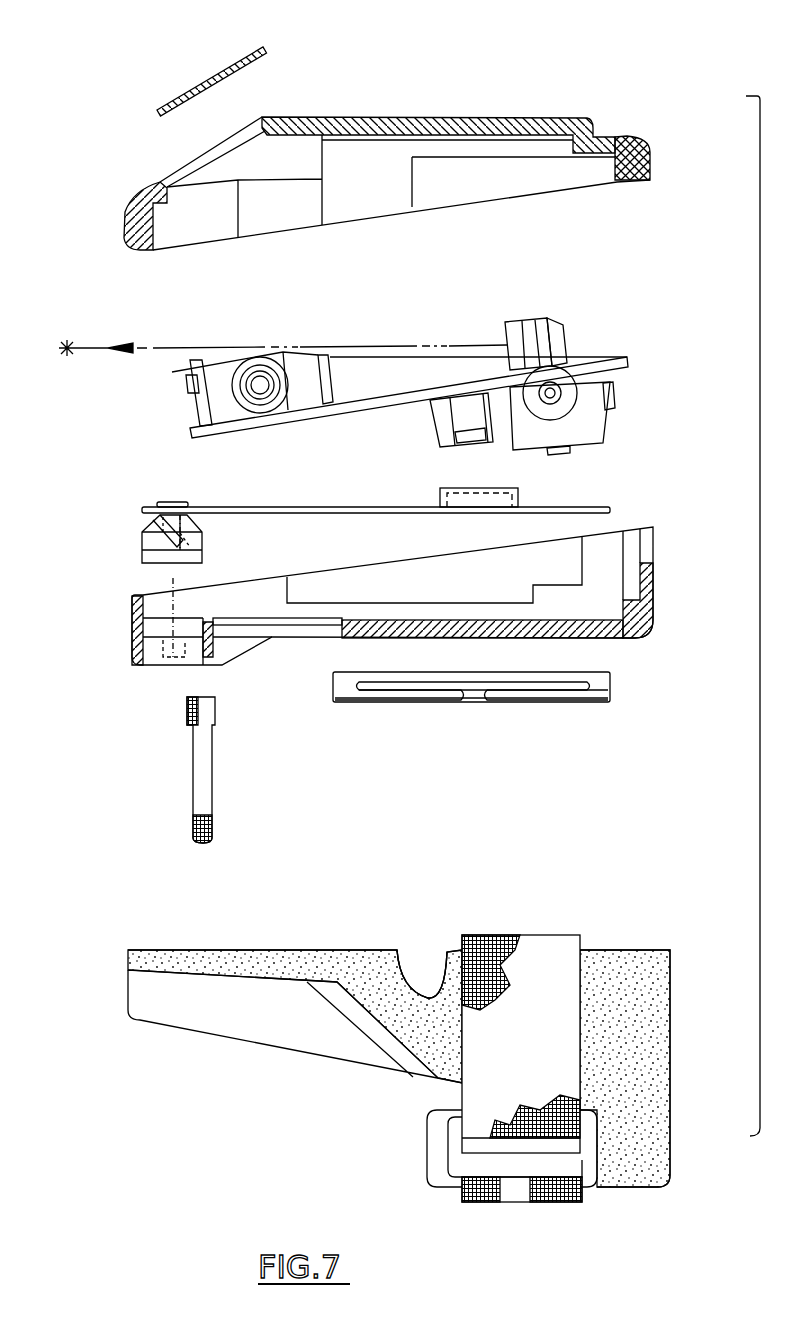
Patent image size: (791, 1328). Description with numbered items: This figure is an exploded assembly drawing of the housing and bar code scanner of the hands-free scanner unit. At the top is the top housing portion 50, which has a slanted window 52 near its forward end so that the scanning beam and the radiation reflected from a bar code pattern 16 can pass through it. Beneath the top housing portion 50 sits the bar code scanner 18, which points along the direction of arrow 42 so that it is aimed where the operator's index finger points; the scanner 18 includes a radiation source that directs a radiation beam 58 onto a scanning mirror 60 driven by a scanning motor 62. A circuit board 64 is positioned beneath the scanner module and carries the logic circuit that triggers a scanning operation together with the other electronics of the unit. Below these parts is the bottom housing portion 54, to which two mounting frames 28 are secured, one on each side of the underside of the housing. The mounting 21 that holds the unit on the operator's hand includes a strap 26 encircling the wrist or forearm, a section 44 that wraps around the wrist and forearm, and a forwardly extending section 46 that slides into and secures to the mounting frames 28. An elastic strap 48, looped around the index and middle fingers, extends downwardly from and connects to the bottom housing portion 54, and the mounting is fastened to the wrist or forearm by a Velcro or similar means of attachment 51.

The bar code pattern 16 is at (70, 338).
The bar code scanner 18 is at (427, 333).
The mounting 21 is at (300, 1059).
The strap 26 is at (530, 1056).
The mounting frames 28 is at (376, 706).
The arrow 42 is at (176, 346).
The section 44 is at (638, 1056).
The forwardly extending section 46 is at (408, 1016).
The elastic strap 48 is at (215, 782).
The top housing portion 50 is at (503, 117).
The means of attachment 51 is at (538, 1203).
The slanted window 52 is at (215, 68).
The bottom housing portion 54 is at (657, 590).
The radiation beam 58 is at (364, 366).
The scanning mirror 60 is at (495, 330).
The scanning motor 62 is at (578, 418).
The circuit board 64 is at (351, 507).